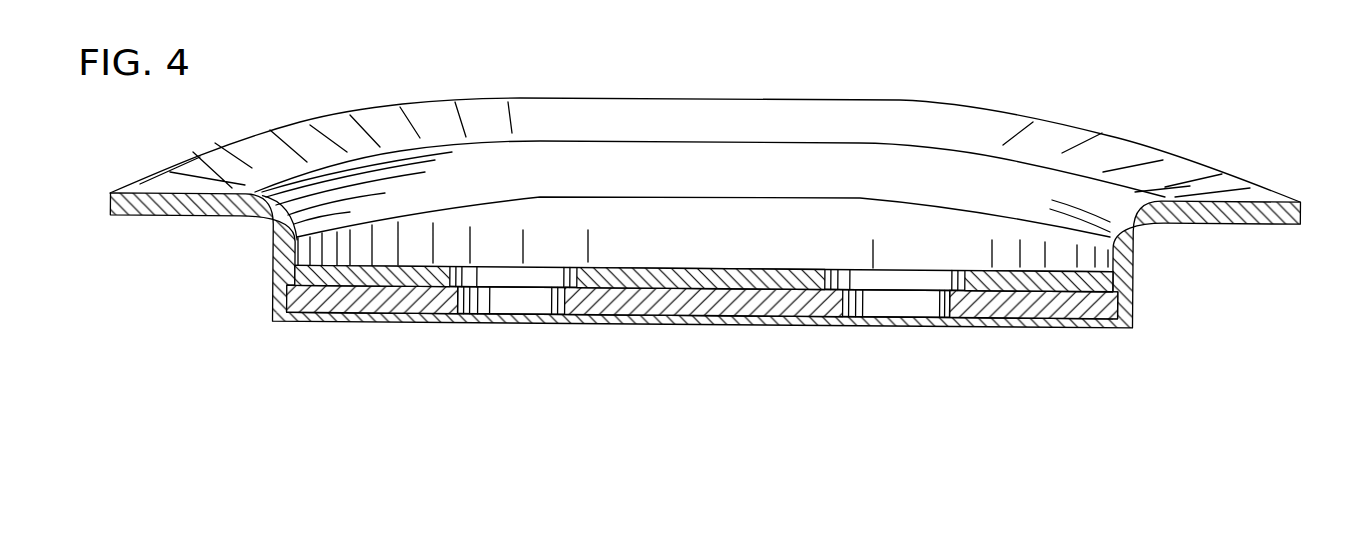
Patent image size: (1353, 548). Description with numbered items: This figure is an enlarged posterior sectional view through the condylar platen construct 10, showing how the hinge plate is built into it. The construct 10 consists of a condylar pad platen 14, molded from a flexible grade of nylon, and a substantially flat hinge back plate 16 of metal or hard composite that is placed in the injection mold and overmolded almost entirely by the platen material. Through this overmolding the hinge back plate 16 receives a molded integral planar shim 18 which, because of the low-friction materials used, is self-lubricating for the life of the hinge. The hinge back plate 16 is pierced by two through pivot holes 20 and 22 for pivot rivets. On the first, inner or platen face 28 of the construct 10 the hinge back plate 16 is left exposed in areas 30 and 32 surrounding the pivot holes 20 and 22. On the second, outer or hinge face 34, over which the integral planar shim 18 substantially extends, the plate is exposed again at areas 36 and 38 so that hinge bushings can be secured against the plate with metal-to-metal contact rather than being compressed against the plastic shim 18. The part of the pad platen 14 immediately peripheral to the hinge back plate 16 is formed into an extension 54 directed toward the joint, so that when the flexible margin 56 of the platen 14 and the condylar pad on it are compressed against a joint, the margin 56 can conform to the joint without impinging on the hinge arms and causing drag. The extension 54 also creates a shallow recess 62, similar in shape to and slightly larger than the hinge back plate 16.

The condylar platen construct 10 is at (1140, 240).
The condylar pad platen 14 is at (267, 226).
The hinge back plate 16 is at (358, 310).
The molded integral planar shim 18 is at (1033, 324).
The pivot hole 20 is at (527, 303).
The pivot hole 22 is at (893, 303).
The first, inner or platen face 28 is at (833, 268).
The exposed area 30 is at (457, 268).
The exposed area 32 is at (958, 273).
The second, outer or hinge face 34 is at (843, 318).
The exposed area 36 is at (458, 322).
The exposed area 38 is at (950, 324).
The extension 54 is at (273, 263).
The flexible margin 56 is at (1238, 172).
The shallow recess 62 is at (1024, 274).